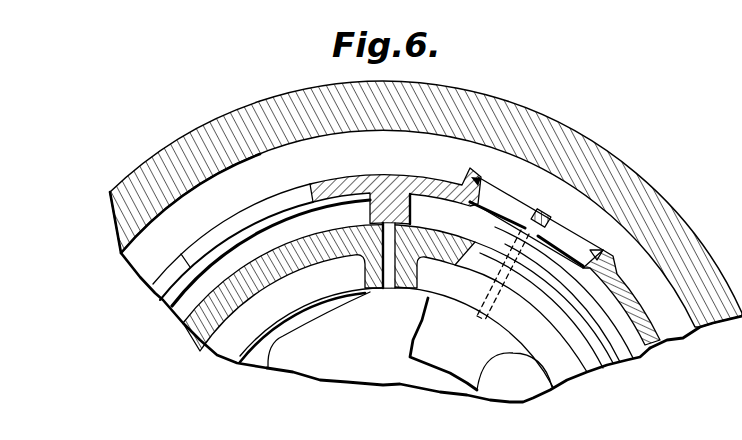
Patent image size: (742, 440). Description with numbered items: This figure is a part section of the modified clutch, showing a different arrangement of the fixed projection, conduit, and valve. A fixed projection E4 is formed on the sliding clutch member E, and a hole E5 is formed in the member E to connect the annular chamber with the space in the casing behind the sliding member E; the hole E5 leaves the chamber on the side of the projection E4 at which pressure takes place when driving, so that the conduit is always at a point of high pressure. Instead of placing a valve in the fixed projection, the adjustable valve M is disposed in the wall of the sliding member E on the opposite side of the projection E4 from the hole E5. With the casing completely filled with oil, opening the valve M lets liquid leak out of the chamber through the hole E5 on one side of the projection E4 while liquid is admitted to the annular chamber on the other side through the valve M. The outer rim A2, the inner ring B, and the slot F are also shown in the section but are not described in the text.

The outer rim A2 is at (484, 118).
The hole E5 is at (264, 210).
The fixed projection E4 is at (392, 212).
The clutch member E is at (166, 295).
The inner hub ring B is at (200, 333).
The key slot F is at (390, 265).
The valve M is at (567, 227).